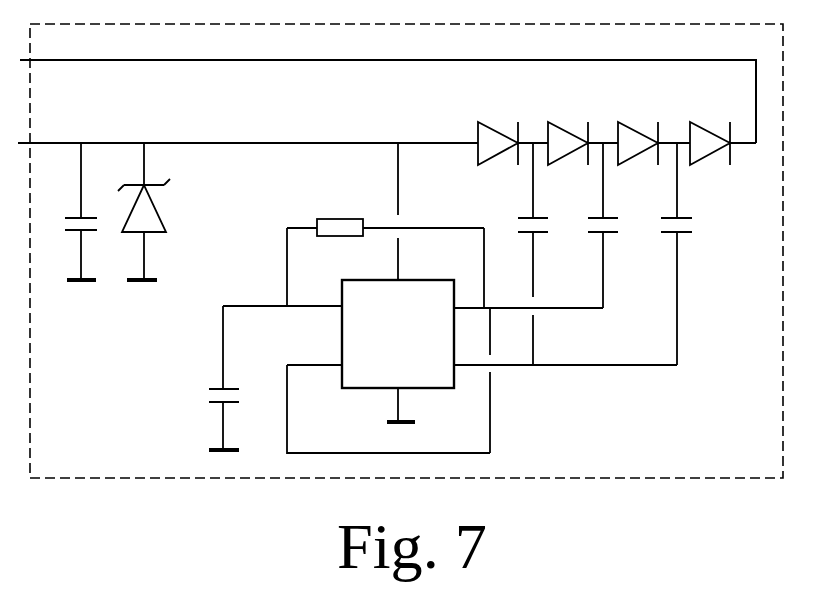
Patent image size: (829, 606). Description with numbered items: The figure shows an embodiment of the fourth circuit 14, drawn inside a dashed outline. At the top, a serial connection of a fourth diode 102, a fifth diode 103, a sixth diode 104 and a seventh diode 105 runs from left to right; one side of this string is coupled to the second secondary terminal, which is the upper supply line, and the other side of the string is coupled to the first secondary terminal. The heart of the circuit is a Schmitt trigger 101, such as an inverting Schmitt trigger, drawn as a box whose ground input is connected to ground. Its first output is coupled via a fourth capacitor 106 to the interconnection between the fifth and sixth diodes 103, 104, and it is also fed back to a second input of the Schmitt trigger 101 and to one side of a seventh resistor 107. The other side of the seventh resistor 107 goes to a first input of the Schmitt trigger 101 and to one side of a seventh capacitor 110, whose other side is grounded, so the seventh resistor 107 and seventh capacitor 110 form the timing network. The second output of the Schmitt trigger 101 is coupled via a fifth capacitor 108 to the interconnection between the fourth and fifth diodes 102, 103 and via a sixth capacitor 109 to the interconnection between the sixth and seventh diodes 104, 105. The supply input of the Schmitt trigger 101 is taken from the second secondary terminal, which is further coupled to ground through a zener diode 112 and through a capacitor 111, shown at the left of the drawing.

The fourth circuit 14 is at (743, 478).
The Schmitt trigger 101 is at (393, 355).
The fourth diode 102 is at (498, 121).
The fifth diode 103 is at (568, 121).
The sixth diode 104 is at (638, 121).
The seventh diode 105 is at (710, 121).
The fourth capacitor 106 is at (618, 225).
The seventh resistor 107 is at (385, 244).
The fifth capacitor 108 is at (548, 254).
The sixth capacitor 109 is at (691, 254).
The seventh capacitor 110 is at (199, 378).
The capacitor 111 is at (68, 211).
The zener diode 112 is at (157, 211).